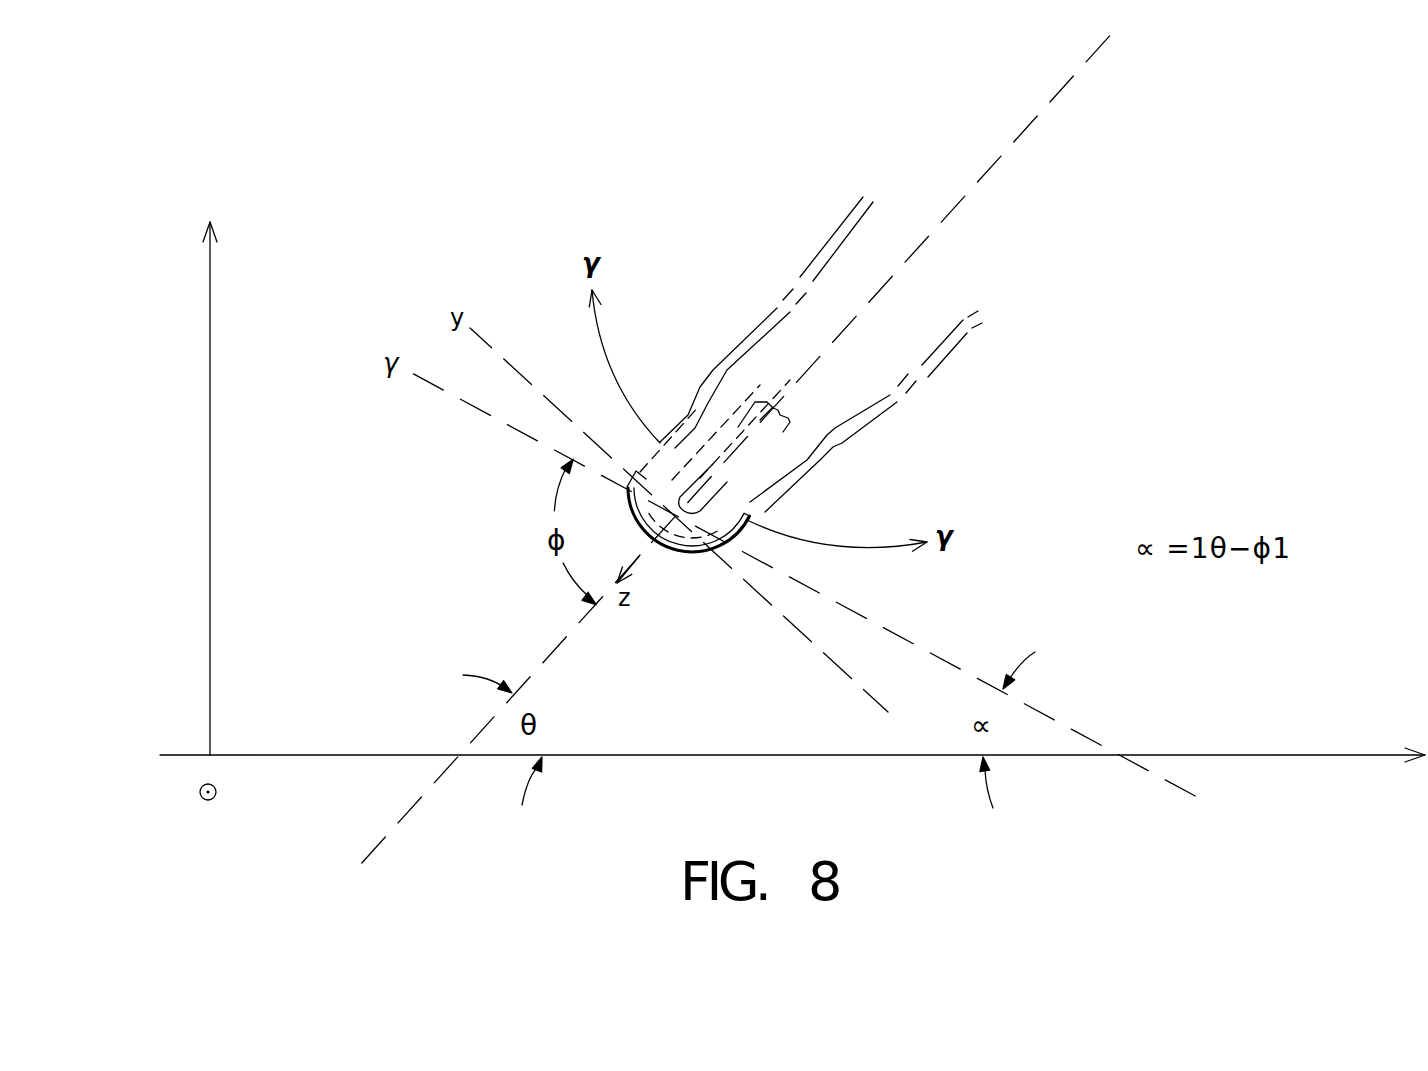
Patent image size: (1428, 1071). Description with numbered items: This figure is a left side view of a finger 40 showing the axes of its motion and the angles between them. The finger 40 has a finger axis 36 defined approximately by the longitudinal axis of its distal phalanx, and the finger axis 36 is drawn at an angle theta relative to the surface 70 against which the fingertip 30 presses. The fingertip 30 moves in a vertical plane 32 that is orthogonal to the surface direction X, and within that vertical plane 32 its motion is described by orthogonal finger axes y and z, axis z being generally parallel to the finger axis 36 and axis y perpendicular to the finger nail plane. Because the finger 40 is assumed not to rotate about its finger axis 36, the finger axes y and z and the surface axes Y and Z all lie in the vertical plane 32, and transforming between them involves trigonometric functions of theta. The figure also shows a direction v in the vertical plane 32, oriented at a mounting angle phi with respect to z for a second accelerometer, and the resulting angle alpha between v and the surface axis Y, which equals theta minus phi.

The finger tip 30 is at (748, 497).
The vertical plane 32 is at (317, 315).
The finger axis 36 is at (1060, 92).
The finger 40 is at (870, 398).
The surface 70 is at (1243, 755).